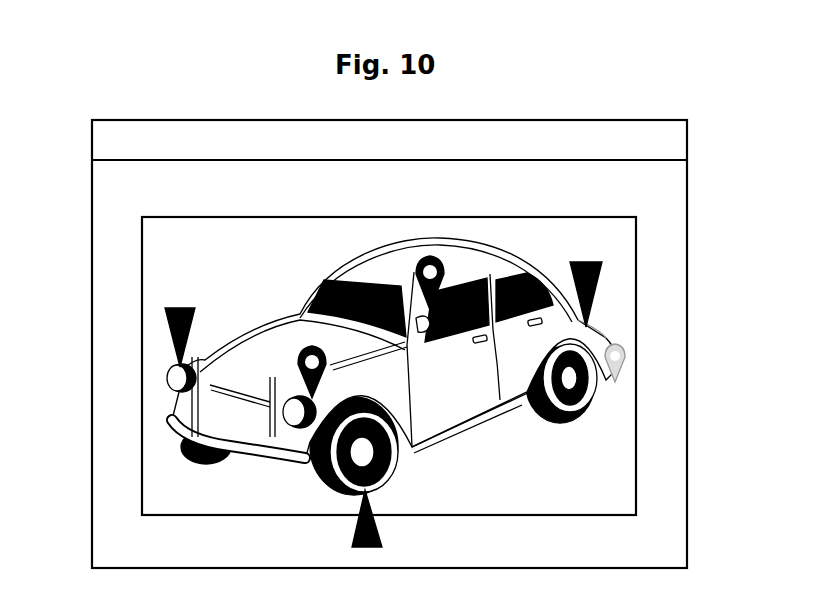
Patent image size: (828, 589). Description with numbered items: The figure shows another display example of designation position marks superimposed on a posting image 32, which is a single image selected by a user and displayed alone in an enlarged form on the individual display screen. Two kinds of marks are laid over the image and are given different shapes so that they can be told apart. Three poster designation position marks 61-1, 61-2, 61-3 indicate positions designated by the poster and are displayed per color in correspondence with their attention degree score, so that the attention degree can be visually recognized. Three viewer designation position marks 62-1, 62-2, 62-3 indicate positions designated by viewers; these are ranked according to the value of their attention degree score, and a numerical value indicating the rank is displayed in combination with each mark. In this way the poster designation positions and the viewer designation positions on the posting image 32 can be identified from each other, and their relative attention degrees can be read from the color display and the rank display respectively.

The posting image 32 is at (357, 218).
The poster designation position mark 61-1 is at (303, 348).
The poster designation position mark 61-2 is at (619, 378).
The poster designation position mark 61-3 is at (432, 262).
The viewer designation position mark 62-1 is at (381, 533).
The viewer designation position mark 62-2 is at (598, 274).
The viewer designation position mark 62-3 is at (168, 316).